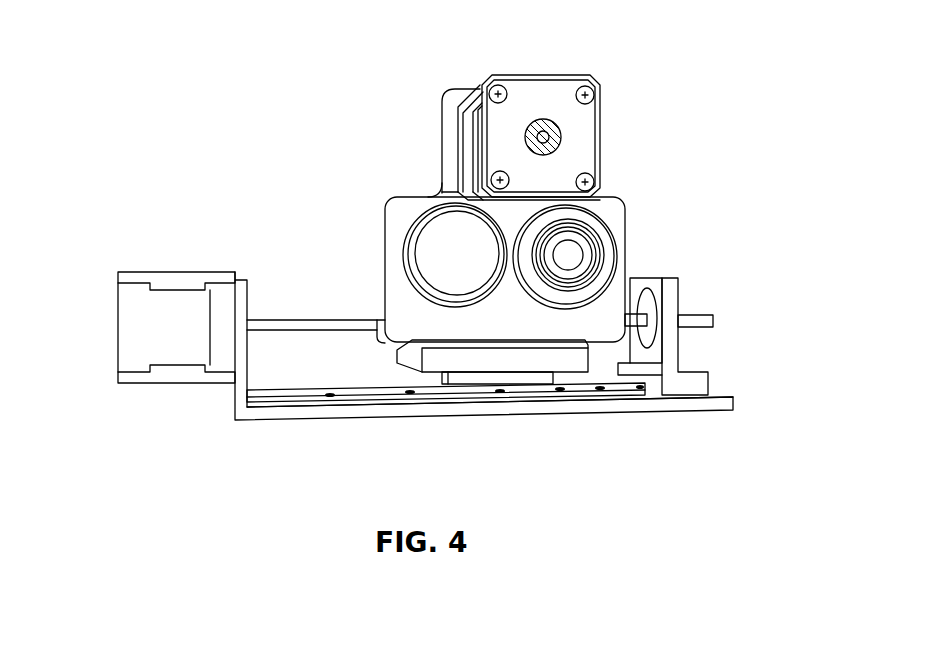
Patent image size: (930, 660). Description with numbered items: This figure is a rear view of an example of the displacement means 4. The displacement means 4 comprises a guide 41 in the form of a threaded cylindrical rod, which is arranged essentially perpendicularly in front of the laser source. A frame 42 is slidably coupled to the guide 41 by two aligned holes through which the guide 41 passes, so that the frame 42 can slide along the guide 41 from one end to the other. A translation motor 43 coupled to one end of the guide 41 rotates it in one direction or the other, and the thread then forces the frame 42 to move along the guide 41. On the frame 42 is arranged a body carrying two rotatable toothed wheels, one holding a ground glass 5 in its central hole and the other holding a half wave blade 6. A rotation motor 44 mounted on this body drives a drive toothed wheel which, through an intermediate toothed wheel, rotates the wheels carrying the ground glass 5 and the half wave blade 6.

The displacement means 4 is at (713, 90).
The ground glass 5 is at (452, 257).
The half wave blade 6 is at (568, 257).
The guide 41 is at (298, 325).
The frame 42 is at (503, 368).
The translation motor 43 is at (145, 343).
The rotation motor 44 is at (570, 133).